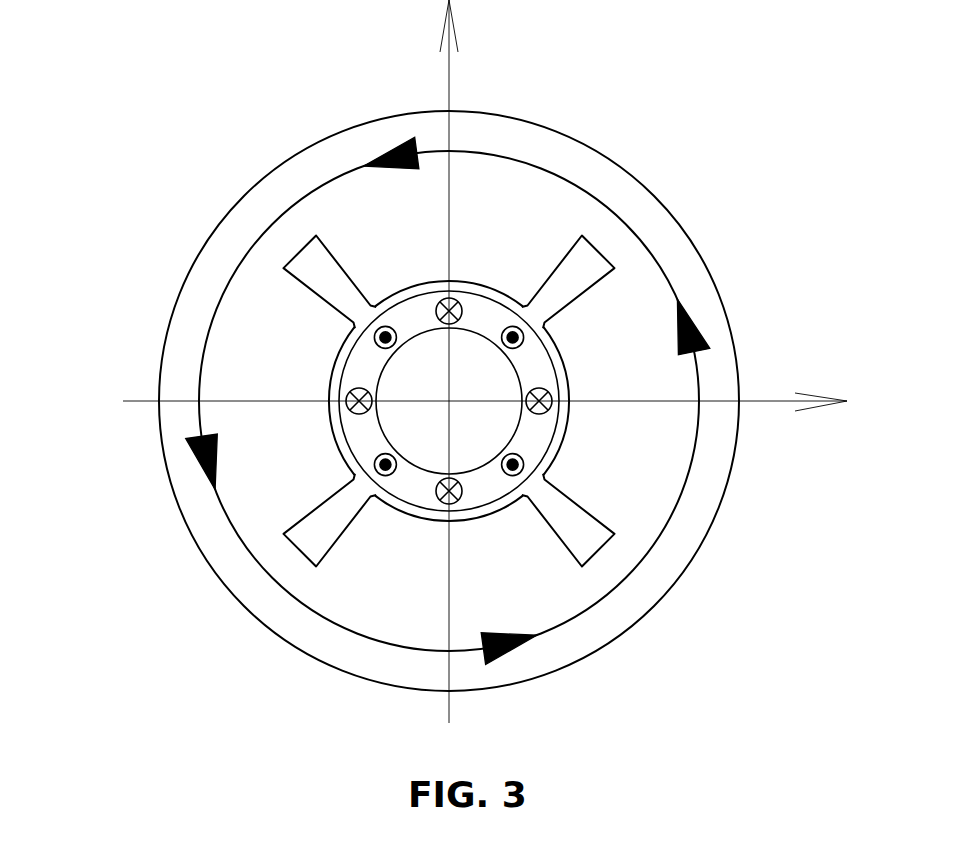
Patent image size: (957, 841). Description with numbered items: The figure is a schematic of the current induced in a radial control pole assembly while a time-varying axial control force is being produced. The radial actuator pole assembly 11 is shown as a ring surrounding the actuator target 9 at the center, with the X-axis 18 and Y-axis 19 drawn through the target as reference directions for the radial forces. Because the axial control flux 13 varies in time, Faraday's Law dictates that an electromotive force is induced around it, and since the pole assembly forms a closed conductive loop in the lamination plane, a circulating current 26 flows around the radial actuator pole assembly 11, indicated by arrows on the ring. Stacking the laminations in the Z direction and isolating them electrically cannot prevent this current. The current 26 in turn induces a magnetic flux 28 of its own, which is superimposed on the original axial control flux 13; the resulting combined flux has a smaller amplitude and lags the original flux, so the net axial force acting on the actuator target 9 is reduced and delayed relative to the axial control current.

The actuator target 9 is at (533, 440).
The radial actuator pole assembly 11 is at (193, 498).
The axial control flux 13 is at (542, 392).
The X-axis 18 is at (767, 400).
The Y-axis 19 is at (449, 80).
The current 26 is at (380, 152).
The magnetic flux 28 is at (372, 340).